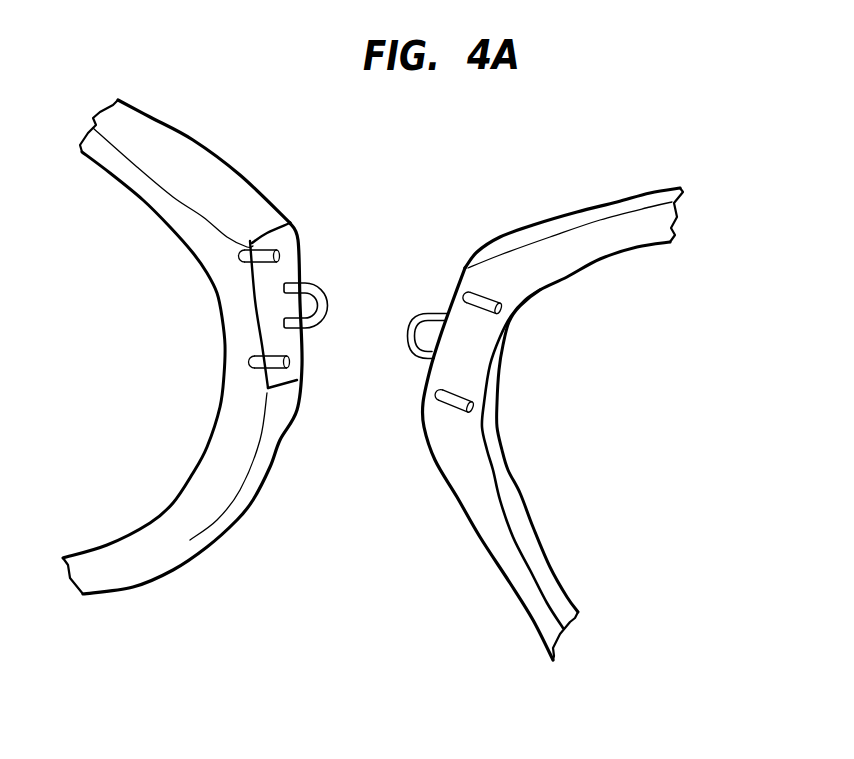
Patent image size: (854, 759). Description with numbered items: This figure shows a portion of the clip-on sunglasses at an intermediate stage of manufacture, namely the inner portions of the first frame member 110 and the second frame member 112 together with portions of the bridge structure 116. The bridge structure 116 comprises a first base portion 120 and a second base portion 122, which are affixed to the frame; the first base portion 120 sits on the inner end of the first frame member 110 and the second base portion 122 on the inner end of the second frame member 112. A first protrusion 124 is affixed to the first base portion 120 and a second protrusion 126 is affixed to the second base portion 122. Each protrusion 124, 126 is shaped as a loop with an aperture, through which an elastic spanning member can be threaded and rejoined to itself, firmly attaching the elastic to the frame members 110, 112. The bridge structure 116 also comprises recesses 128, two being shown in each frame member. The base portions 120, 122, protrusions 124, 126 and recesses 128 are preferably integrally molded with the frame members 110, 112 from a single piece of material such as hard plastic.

The first frame member 110 is at (195, 141).
The second frame member 112 is at (572, 214).
The bridge structure 116 is at (387, 207).
The first base portion 120 is at (298, 240).
The second base portion 122 is at (427, 385).
The first protrusion 124 is at (316, 284).
The second protrusion 126 is at (420, 314).
The recesses 128 is at (287, 358).